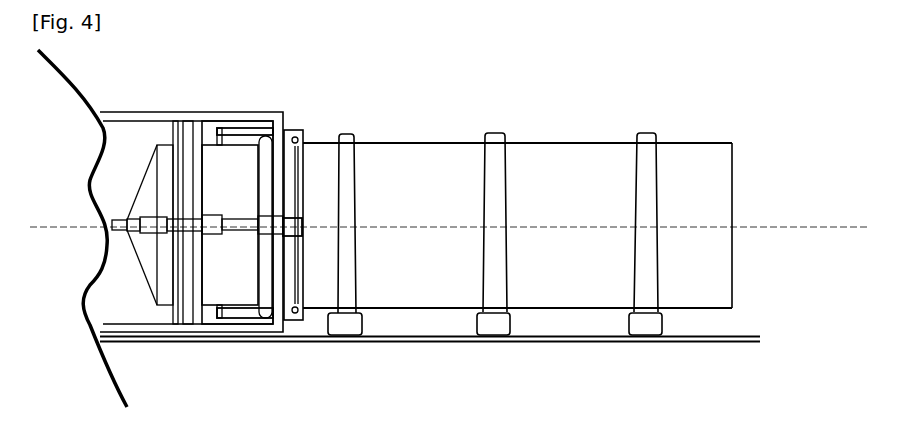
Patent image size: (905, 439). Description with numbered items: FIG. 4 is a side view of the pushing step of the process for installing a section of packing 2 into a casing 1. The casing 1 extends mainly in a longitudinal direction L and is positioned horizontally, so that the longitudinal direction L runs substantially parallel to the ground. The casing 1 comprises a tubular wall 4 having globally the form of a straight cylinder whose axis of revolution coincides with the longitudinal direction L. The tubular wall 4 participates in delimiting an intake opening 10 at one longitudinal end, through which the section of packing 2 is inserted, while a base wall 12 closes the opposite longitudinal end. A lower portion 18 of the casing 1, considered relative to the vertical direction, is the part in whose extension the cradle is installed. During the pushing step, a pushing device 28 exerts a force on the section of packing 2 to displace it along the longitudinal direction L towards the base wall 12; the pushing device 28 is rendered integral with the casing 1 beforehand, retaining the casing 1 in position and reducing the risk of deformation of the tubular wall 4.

The casing 1 is at (633, 157).
The section of packing 2 is at (201, 248).
The tubular wall 4 is at (450, 303).
The intake opening 10 is at (292, 163).
The base wall 12 is at (733, 193).
The lower portion 18 is at (378, 308).
The pushing device 28 is at (227, 160).
The longitudinal direction L is at (802, 230).